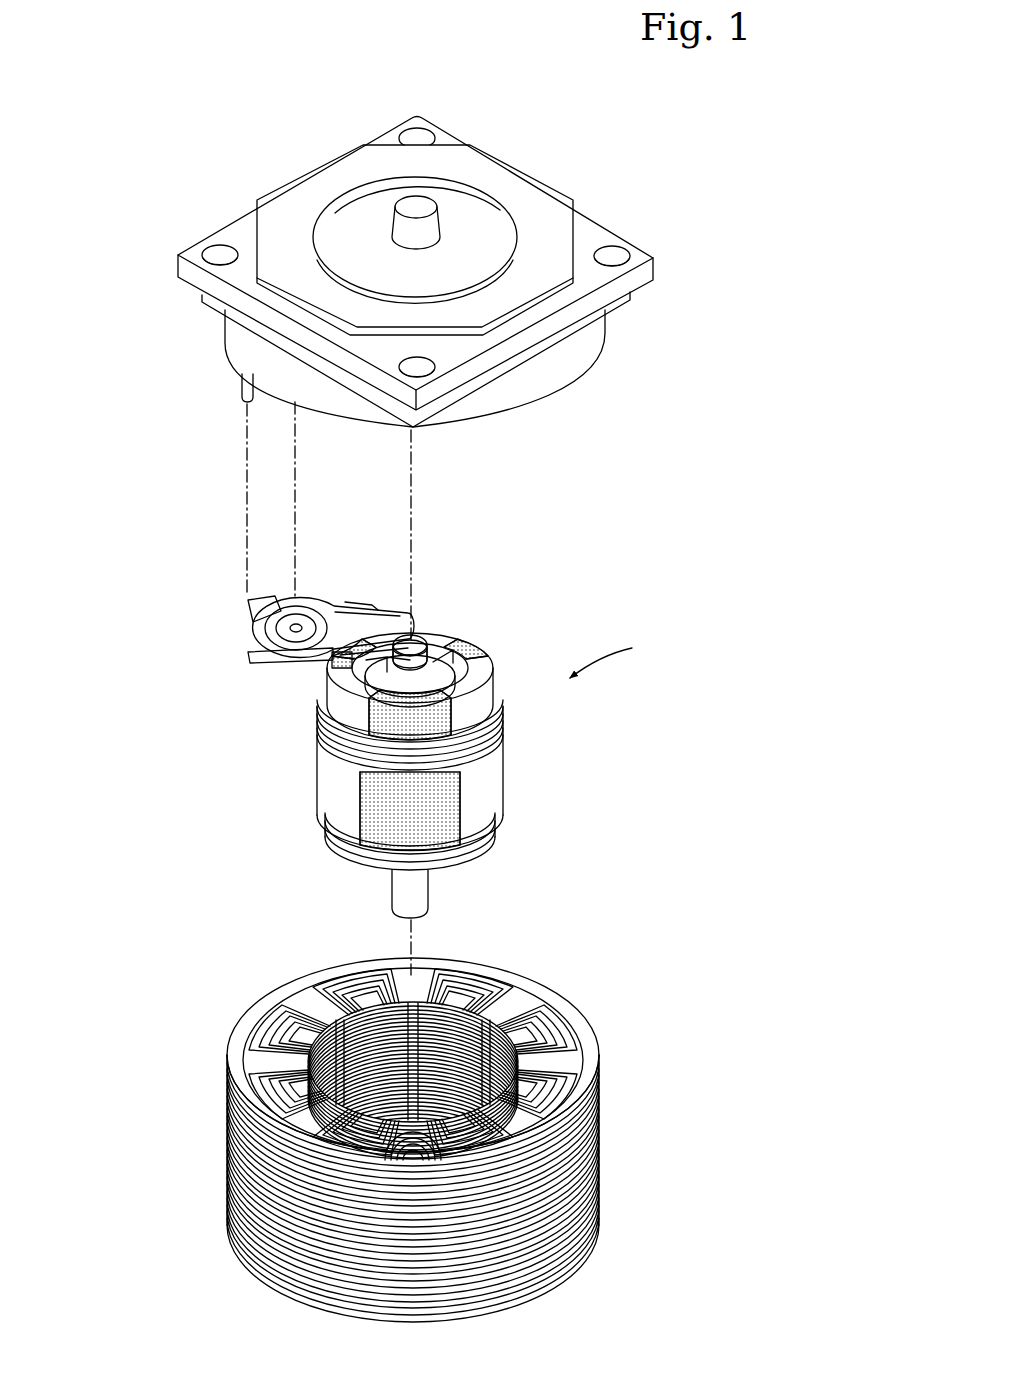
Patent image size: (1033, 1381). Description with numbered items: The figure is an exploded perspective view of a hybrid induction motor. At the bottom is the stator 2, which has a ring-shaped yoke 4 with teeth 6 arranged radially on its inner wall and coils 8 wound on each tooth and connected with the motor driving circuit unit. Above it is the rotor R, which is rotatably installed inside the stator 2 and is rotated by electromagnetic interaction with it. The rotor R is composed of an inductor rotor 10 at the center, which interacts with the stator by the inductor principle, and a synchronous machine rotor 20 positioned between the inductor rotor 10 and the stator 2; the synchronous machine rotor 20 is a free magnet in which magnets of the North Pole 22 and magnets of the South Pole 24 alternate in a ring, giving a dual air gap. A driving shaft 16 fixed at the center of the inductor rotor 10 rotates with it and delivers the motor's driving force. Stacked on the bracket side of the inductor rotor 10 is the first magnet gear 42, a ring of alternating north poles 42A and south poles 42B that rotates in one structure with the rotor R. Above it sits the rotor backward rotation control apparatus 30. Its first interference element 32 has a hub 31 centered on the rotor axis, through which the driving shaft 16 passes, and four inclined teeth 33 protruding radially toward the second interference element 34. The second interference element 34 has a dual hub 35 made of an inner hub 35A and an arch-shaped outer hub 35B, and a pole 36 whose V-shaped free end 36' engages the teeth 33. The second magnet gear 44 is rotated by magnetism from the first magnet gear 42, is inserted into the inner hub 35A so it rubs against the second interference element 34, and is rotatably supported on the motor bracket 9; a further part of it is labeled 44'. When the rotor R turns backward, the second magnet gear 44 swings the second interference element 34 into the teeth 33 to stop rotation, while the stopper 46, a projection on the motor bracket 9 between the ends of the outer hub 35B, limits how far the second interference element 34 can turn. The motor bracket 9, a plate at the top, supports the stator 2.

The motor bracket 9 is at (550, 233).
The stopper 46 is at (243, 390).
The rotor backward rotation control apparatus 30 is at (280, 551).
The hub 35 is at (312, 592).
The inner hub 35A is at (268, 598).
The outer hub 35B is at (293, 600).
The second interference element 34 is at (367, 527).
The pole 36 is at (367, 569).
The free end 36' is at (400, 609).
The tab 44' is at (258, 666).
The second magnet gear 44 is at (273, 688).
The rotor R is at (431, 743).
The synchronous machine rotor 20 is at (425, 733).
The first magnet gear 42 is at (433, 722).
The north pole 42A is at (440, 715).
The south pole 42B is at (483, 690).
The hub 31 is at (422, 632).
The first interference element 32 is at (585, 602).
The teeth 33 is at (452, 660).
The inductor rotor 10 is at (347, 750).
The magnets of the South Pole 24 is at (340, 813).
The magnets of the North Pole 22 is at (383, 828).
The driving shaft 16 is at (412, 895).
The stator 2 is at (349, 1140).
The yoke 4 is at (250, 1172).
The teeth 6 is at (248, 1090).
The coils 8 is at (252, 1068).